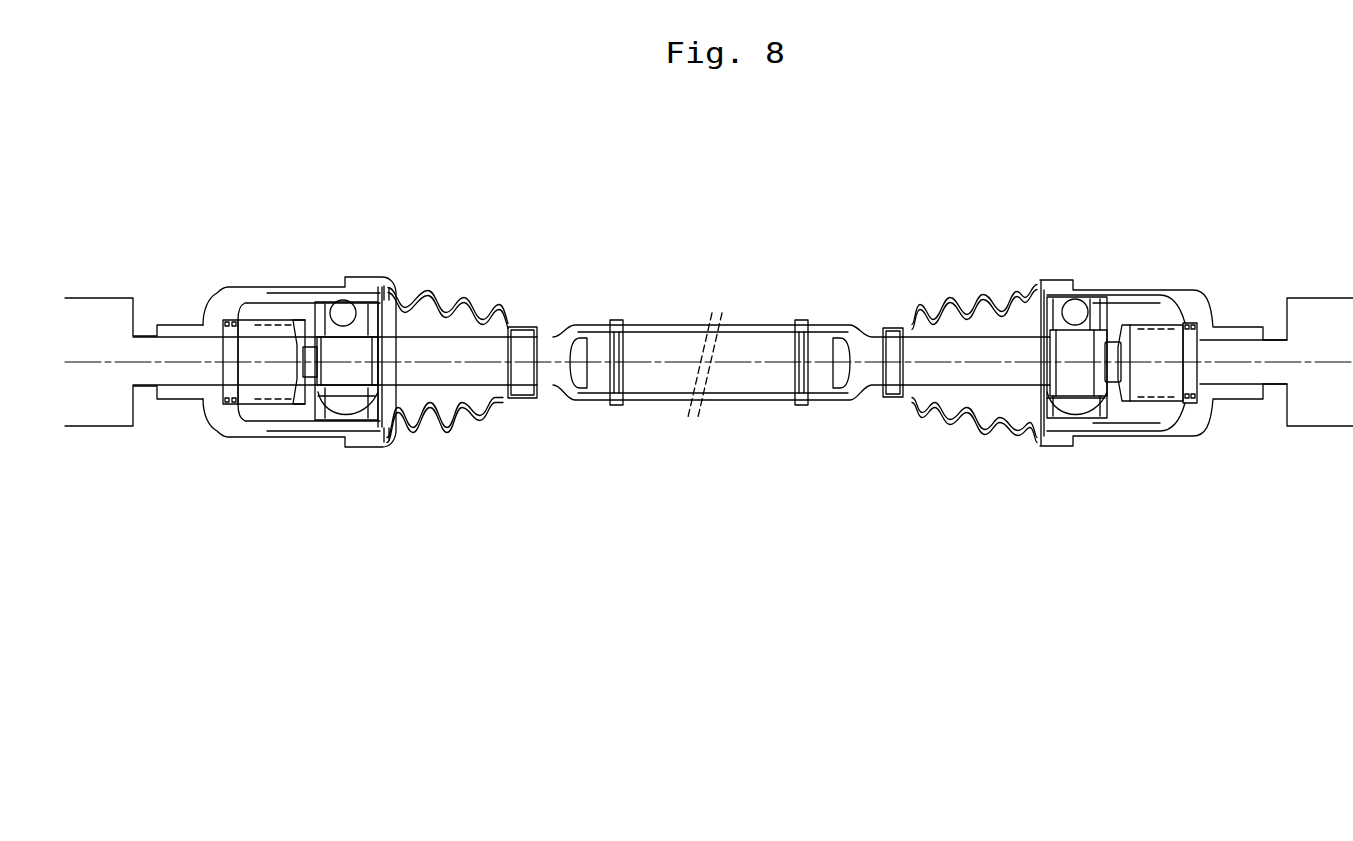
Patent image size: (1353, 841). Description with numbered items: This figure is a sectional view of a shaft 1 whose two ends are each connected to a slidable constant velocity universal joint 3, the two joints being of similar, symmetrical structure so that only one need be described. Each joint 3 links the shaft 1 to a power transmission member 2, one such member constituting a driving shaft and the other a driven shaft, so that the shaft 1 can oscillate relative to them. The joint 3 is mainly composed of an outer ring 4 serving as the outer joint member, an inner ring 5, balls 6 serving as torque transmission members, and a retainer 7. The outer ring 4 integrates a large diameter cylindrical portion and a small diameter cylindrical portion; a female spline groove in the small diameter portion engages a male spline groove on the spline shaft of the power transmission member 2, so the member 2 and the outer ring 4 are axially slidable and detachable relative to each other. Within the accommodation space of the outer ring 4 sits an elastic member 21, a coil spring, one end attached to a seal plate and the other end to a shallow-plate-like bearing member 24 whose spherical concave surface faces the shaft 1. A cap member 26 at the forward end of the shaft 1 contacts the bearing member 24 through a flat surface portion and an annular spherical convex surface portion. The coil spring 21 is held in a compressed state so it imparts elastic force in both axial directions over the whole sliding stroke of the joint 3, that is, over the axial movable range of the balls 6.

The shaft 1 is at (760, 325).
The power transmission member 2 is at (97, 413).
The slidable constant velocity universal joint 3 is at (304, 285).
The outer ring 4 is at (1200, 291).
The inner ring 5 is at (1062, 399).
The balls 6 is at (1081, 308).
The retainer 7 is at (1099, 313).
The elastic member 21 is at (1162, 322).
The bearing member 24 is at (1142, 387).
The cap member 26 is at (1110, 385).